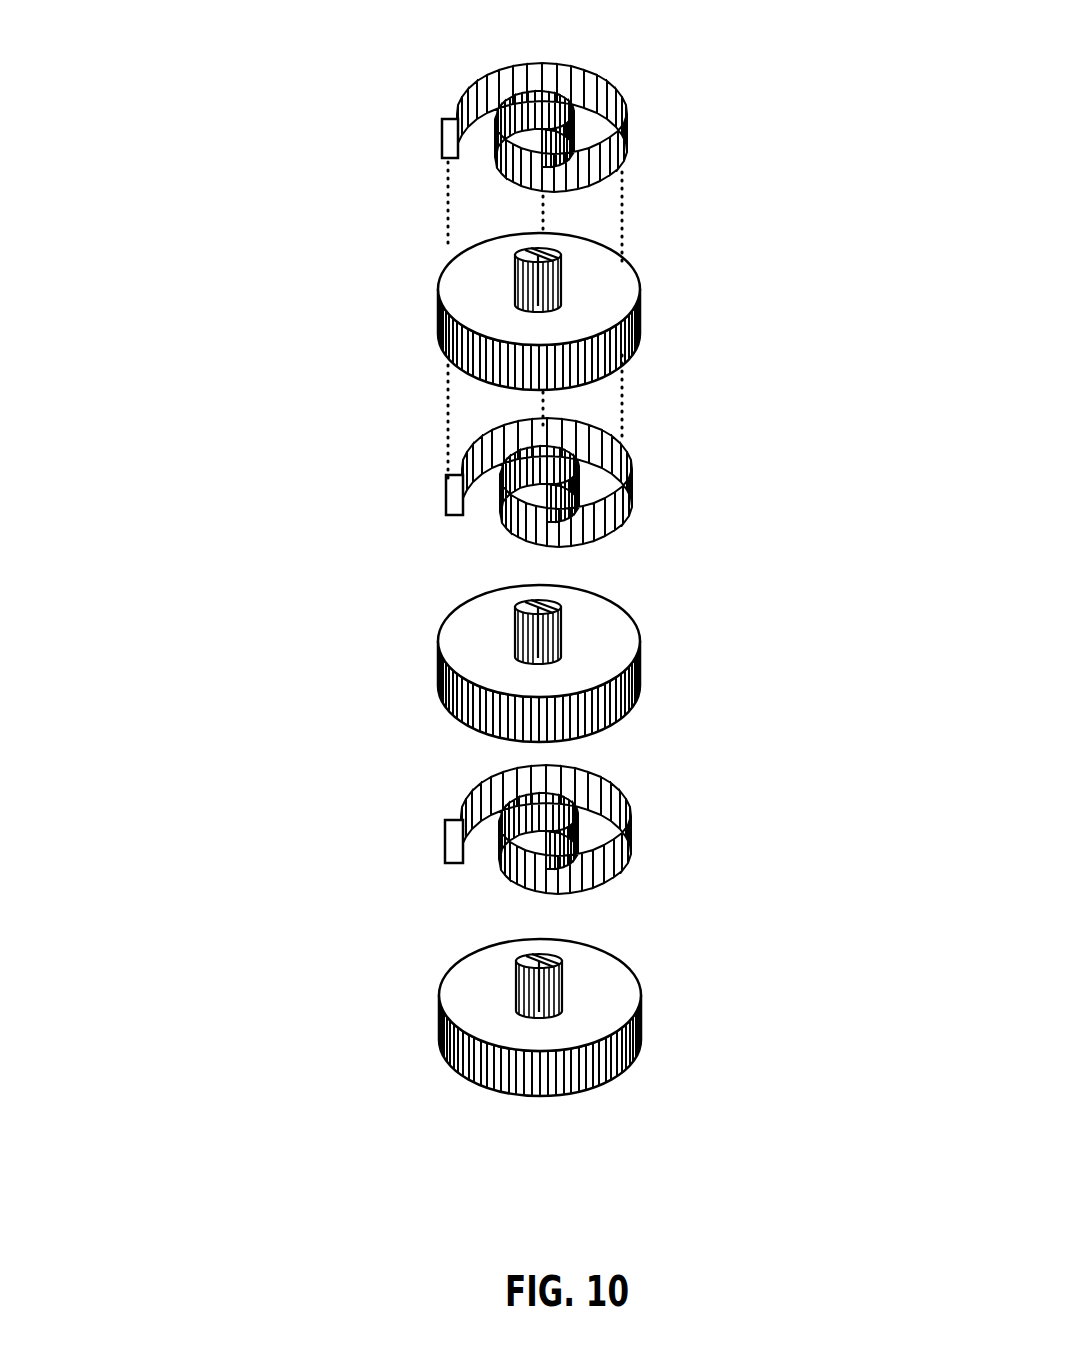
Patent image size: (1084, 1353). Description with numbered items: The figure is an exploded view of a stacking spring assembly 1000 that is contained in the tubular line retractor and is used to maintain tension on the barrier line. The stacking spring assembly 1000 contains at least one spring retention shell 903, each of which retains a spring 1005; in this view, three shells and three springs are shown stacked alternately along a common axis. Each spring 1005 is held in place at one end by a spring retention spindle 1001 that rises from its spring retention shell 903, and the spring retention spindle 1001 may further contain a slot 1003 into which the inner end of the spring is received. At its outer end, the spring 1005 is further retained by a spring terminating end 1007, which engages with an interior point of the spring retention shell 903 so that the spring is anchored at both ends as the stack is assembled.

The stacking spring assembly 1000 is at (236, 118).
The spring 1005 is at (632, 140).
The spring terminating end 1007 is at (442, 133).
The spring retention shell 903 is at (598, 312).
The spring retention spindle 1001 is at (563, 253).
The slot 1003 is at (523, 262).